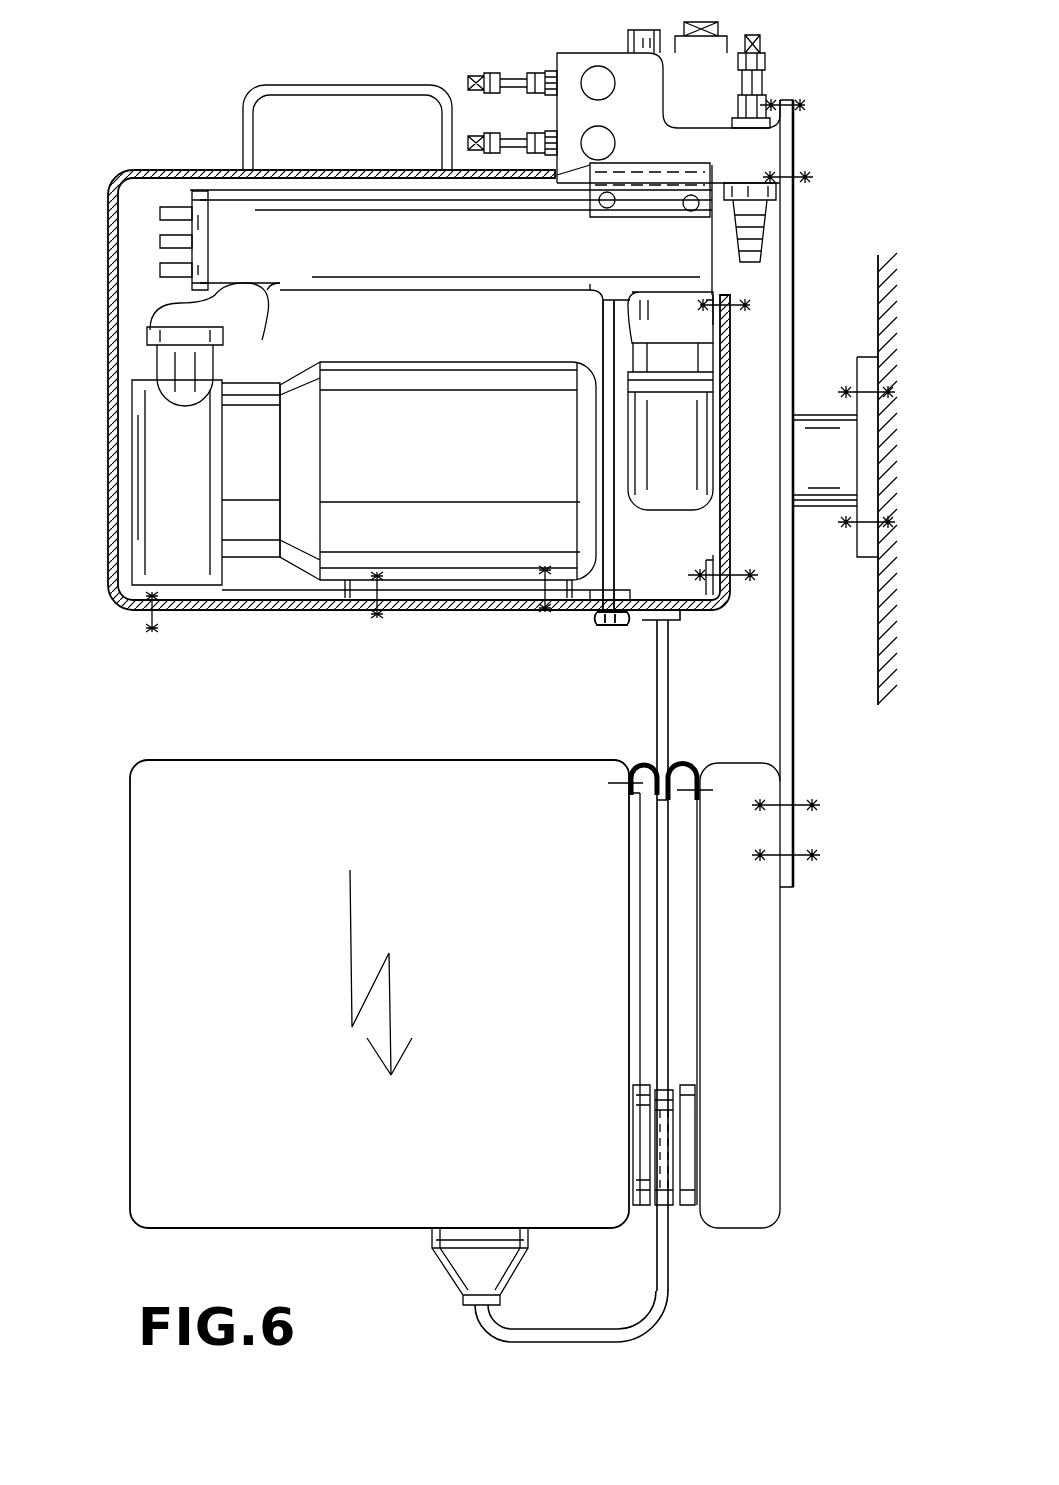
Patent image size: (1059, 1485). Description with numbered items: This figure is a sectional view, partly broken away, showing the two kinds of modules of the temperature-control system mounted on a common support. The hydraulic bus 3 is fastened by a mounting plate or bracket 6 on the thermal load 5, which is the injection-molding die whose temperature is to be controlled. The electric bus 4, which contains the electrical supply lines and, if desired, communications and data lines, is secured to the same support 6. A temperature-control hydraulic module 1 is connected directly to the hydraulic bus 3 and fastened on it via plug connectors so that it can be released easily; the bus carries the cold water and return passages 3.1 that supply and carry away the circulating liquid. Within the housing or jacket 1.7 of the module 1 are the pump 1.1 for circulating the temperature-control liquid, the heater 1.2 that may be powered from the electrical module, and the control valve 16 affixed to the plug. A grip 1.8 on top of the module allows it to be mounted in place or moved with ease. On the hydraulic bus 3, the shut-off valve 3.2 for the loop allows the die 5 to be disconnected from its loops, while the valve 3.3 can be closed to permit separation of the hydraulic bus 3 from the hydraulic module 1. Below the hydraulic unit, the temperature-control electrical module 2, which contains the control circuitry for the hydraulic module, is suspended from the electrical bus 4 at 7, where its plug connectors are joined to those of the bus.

The temperature-control hydraulic module 1 is at (444, 341).
The pump 1.1 is at (452, 532).
The heater 1.2 is at (200, 191).
The housing 1.7 is at (112, 530).
The grip 1.8 is at (312, 93).
The temperature-control electrical module 2 is at (153, 843).
The hydraulic bus 3 is at (757, 157).
The cold water and return passages 3.1 is at (598, 83).
The shut-off valve 3.2 is at (755, 237).
The valve 3.3 is at (755, 78).
The electric bus 4 is at (770, 1033).
The thermal load 5 is at (870, 315).
The mounting plate or bracket 6 is at (790, 218).
The suspension point on electrical bus 7 is at (692, 756).
The control valve 16 is at (676, 472).